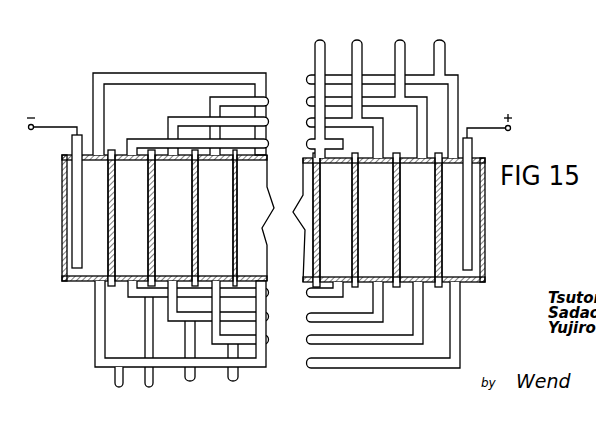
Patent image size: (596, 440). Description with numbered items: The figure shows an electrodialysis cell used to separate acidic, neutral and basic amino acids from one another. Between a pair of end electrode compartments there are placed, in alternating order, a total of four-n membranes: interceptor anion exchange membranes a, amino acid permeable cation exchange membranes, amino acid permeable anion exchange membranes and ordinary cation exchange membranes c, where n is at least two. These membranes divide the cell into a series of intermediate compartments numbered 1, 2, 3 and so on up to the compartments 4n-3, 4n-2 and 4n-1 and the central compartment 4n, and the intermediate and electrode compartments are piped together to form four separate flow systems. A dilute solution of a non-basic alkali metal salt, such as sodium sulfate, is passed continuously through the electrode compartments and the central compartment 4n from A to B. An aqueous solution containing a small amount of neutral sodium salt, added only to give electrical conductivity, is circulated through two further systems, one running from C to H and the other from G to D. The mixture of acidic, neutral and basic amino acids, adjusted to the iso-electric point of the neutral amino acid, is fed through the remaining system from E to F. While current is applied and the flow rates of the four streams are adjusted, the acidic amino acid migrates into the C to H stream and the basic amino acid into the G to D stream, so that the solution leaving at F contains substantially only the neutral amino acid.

The first intermediate compartment 1 is at (131, 218).
The second intermediate compartment 2 is at (173, 218).
The third intermediate compartment 3 is at (215, 218).
The central compartment 4n is at (252, 218).
The intermediate compartment 4n-3 is at (336, 220).
The intermediate compartment 4n-2 is at (375, 220).
The intermediate compartment 4n-1 is at (417, 220).
The interceptor anion exchange membrane a is at (115, 187).
The ordinary cation exchange membrane c is at (237, 187).
The inlet A is at (440, 3).
The outlet B is at (119, 393).
The inlet C is at (400, 3).
The outlet D is at (150, 393).
The inlet E is at (357, 3).
The outlet F is at (190, 393).
The inlet G is at (318, 3).
The outlet H is at (232, 393).